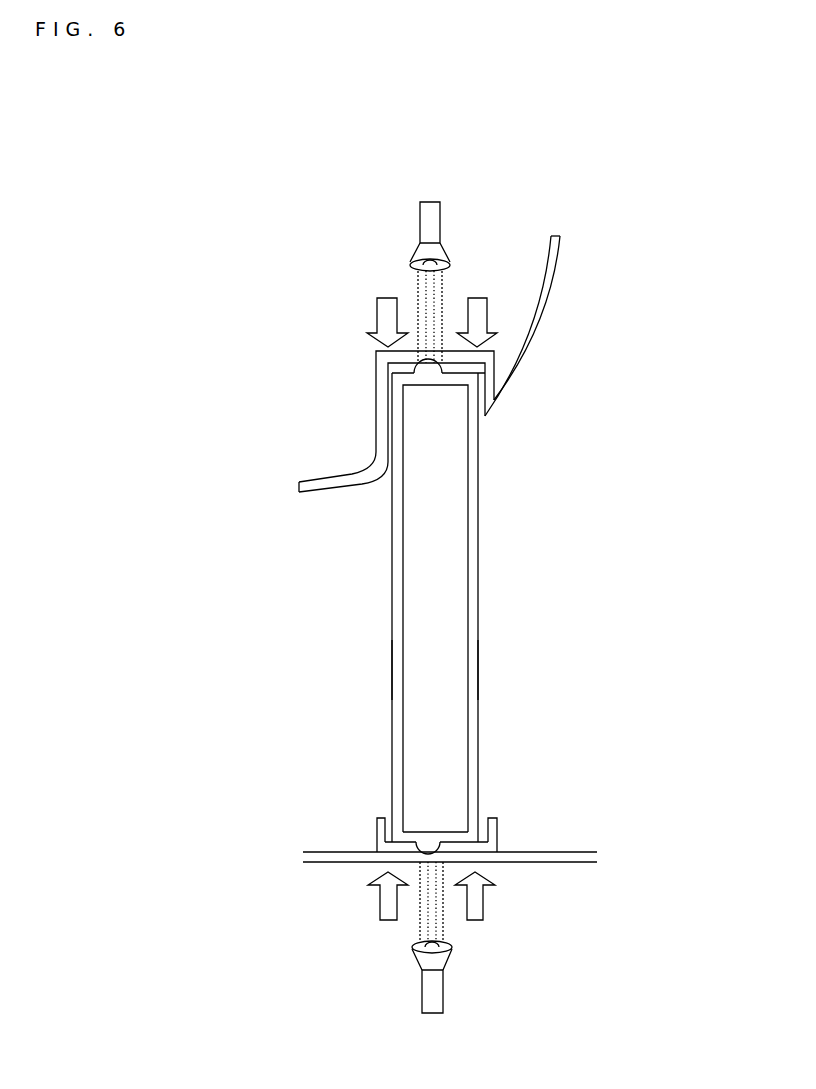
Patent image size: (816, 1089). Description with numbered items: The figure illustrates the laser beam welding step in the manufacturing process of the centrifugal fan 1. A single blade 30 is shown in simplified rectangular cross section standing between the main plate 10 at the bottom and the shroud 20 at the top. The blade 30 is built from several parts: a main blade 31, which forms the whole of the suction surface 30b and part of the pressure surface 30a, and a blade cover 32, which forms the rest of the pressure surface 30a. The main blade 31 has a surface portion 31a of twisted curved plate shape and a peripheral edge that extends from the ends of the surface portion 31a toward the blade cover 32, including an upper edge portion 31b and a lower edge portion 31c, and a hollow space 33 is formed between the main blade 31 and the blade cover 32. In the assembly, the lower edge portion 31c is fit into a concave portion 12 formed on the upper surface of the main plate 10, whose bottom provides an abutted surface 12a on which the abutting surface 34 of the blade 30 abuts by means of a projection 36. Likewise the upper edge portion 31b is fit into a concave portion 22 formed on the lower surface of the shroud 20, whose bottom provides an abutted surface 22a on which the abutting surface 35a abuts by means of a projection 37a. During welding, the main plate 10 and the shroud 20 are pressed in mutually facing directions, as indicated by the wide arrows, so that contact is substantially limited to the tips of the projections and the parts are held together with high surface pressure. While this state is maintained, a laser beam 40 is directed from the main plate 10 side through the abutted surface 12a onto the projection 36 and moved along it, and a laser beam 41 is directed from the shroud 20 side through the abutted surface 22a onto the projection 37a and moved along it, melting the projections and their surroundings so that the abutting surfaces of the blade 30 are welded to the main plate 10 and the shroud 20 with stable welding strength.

The centrifugal fan 1 is at (584, 283).
The main plate 10 is at (532, 843).
The concave portion 12 is at (385, 820).
The abutted surface 12a is at (490, 855).
The shroud 20 is at (530, 342).
The concave portion 22 is at (482, 428).
The abutted surface 22a is at (468, 372).
The blade 30 is at (499, 520).
The pressure surface 30a is at (502, 652).
The suction surface 30b is at (378, 677).
The main blade 31 is at (397, 532).
The surface portion 31a is at (397, 578).
The upper edge portion 31b is at (440, 385).
The lower edge portion 31c is at (450, 838).
The blade cover 32 is at (480, 570).
The hollow space 33 is at (437, 710).
The abutting surface 34 is at (420, 845).
The abutting surface 35a is at (407, 372).
The projection 36 is at (428, 862).
The projection 37a is at (428, 365).
The laser beam 40 is at (445, 913).
The laser beam 41 is at (443, 290).